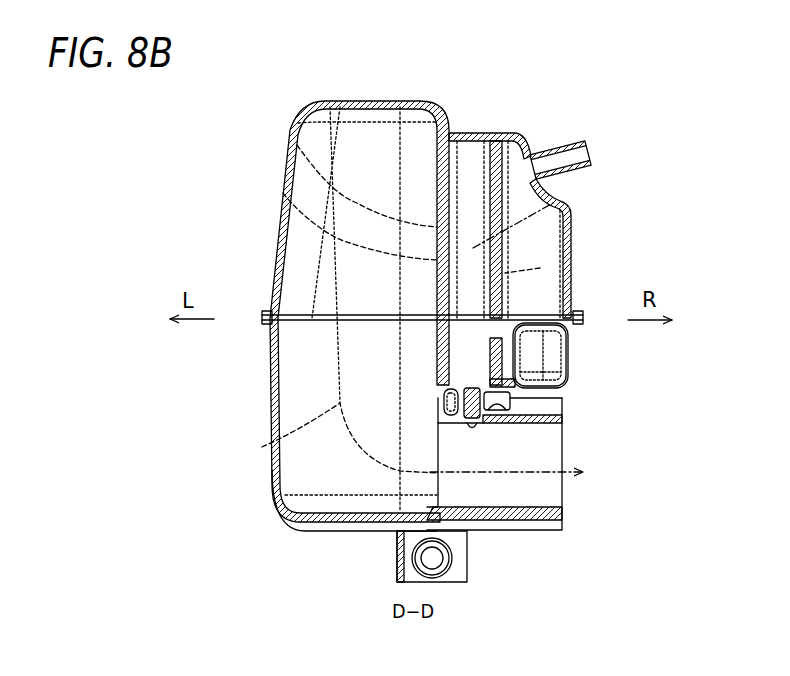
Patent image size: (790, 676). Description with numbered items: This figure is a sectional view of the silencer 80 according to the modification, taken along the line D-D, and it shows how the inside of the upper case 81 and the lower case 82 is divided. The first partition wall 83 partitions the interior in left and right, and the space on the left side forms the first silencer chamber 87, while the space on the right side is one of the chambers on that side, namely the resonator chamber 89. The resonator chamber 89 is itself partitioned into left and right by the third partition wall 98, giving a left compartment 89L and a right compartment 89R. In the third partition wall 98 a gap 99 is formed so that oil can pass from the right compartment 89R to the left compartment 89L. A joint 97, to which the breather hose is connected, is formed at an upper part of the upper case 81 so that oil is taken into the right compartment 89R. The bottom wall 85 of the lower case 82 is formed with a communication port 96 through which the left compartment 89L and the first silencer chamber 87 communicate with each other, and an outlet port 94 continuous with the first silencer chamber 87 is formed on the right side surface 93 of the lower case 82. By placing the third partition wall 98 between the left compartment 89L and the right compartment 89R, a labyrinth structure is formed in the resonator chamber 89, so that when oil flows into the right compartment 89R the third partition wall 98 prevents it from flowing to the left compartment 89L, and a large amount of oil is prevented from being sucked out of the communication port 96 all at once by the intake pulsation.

The silencer 80 is at (259, 106).
The upper case 81 is at (274, 230).
The lower case 82 is at (262, 388).
The first partition wall 83 is at (437, 207).
The bottom wall 85 is at (262, 447).
The first silencer chamber 87 is at (387, 374).
The resonator chamber 89 is at (650, 173).
The left compartment 89L is at (550, 213).
The right compartment 89R is at (543, 243).
The right side surface 93 is at (563, 410).
The outlet port 94 is at (563, 443).
The communication port 96 is at (480, 425).
The joint 97 is at (566, 146).
The third partition wall 98 is at (545, 268).
The gap 99 is at (510, 317).